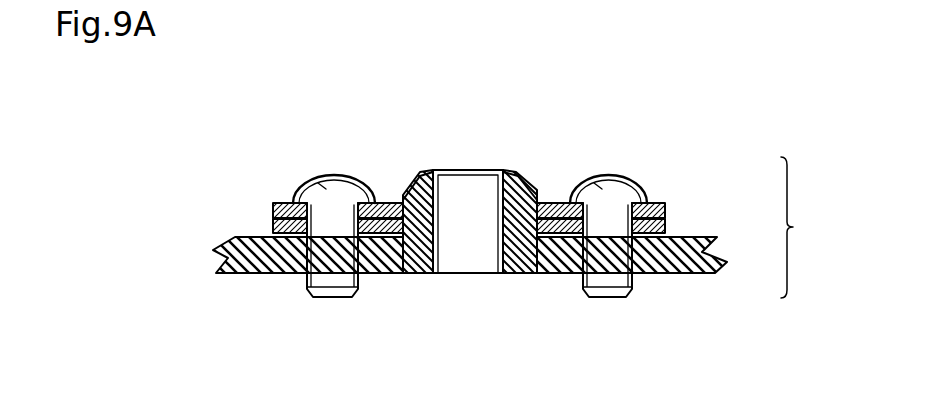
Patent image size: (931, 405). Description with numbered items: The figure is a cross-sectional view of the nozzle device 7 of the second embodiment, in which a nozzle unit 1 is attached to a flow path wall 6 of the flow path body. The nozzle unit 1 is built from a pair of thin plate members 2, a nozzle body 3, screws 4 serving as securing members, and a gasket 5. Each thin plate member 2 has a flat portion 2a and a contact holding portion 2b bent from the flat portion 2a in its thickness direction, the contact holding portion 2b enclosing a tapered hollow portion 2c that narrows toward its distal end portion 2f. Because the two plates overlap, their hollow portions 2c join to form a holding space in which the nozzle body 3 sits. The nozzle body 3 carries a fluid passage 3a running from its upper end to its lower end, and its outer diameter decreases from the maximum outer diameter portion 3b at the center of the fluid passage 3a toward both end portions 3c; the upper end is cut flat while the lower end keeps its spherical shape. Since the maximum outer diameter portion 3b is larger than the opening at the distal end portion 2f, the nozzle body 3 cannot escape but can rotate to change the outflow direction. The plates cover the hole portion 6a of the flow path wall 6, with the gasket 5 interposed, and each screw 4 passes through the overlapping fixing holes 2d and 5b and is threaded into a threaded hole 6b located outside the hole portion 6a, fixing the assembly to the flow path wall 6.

The nozzle unit 1 is at (484, 140).
The thin plate member 2 is at (455, 225).
The flat portion 2a is at (380, 200).
The contact holding portion 2b is at (382, 200).
The hollow portion 2c is at (440, 173).
The fixing hole 2d is at (612, 278).
The distal end portion 2f is at (413, 180).
The nozzle body 3 is at (459, 226).
The fluid passage 3a is at (468, 276).
The maximum outer diameter portion 3b is at (395, 276).
The end portion 3c is at (428, 175).
The screw 4 is at (323, 175).
The gasket 5 is at (519, 209).
The fixing hole 5b is at (633, 295).
The flow path wall 6 is at (243, 276).
The hole portion 6a is at (540, 276).
The threaded hole 6b is at (606, 288).
The nozzle device 7 is at (797, 227).